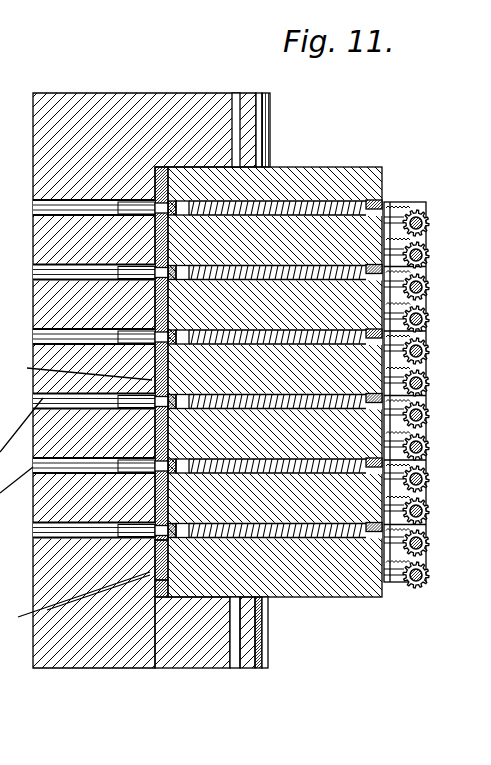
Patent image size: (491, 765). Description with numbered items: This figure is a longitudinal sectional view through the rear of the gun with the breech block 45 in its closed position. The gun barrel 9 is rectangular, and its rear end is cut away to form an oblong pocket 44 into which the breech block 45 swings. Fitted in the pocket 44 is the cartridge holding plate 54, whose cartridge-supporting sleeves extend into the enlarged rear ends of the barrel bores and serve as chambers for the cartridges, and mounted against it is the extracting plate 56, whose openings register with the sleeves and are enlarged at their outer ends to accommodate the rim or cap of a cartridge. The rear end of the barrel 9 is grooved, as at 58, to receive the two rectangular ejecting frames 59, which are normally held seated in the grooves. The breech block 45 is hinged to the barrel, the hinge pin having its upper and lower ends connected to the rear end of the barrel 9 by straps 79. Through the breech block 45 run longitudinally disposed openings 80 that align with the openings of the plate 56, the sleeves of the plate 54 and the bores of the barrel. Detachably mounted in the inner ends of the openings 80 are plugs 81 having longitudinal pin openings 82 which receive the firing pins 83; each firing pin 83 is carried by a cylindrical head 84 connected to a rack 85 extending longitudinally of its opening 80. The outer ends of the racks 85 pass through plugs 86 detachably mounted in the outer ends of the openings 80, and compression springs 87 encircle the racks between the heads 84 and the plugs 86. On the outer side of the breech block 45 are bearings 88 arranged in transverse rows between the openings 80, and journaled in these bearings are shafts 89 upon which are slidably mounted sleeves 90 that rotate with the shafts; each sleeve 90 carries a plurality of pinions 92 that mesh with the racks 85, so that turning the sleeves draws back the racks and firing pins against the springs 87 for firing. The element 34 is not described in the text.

The gun barrel 9 is at (108, 93).
The groove 58 is at (157, 195).
The cartridge holding plate 54 is at (158, 192).
The extracting plate 56 is at (162, 200).
The oblong pocket 44 is at (166, 196).
The firing pin 83 is at (240, 128).
The cylindrical head 84 is at (240, 160).
The breech block 45 is at (303, 175).
The compression spring 87 is at (330, 192).
The longitudinally disposed opening 80 is at (362, 200).
The plug 86 is at (405, 200).
The rack 85 is at (416, 200).
The pinion 92 is at (430, 312).
The shaft 89 is at (430, 347).
The sleeve 90 is at (430, 475).
The bearing 88 is at (393, 578).
The strap 79 is at (263, 647).
The plug 81 is at (168, 540).
The pin opening 82 is at (188, 545).
The ejecting frame 59 is at (153, 570).
The rod 34 is at (160, 515).